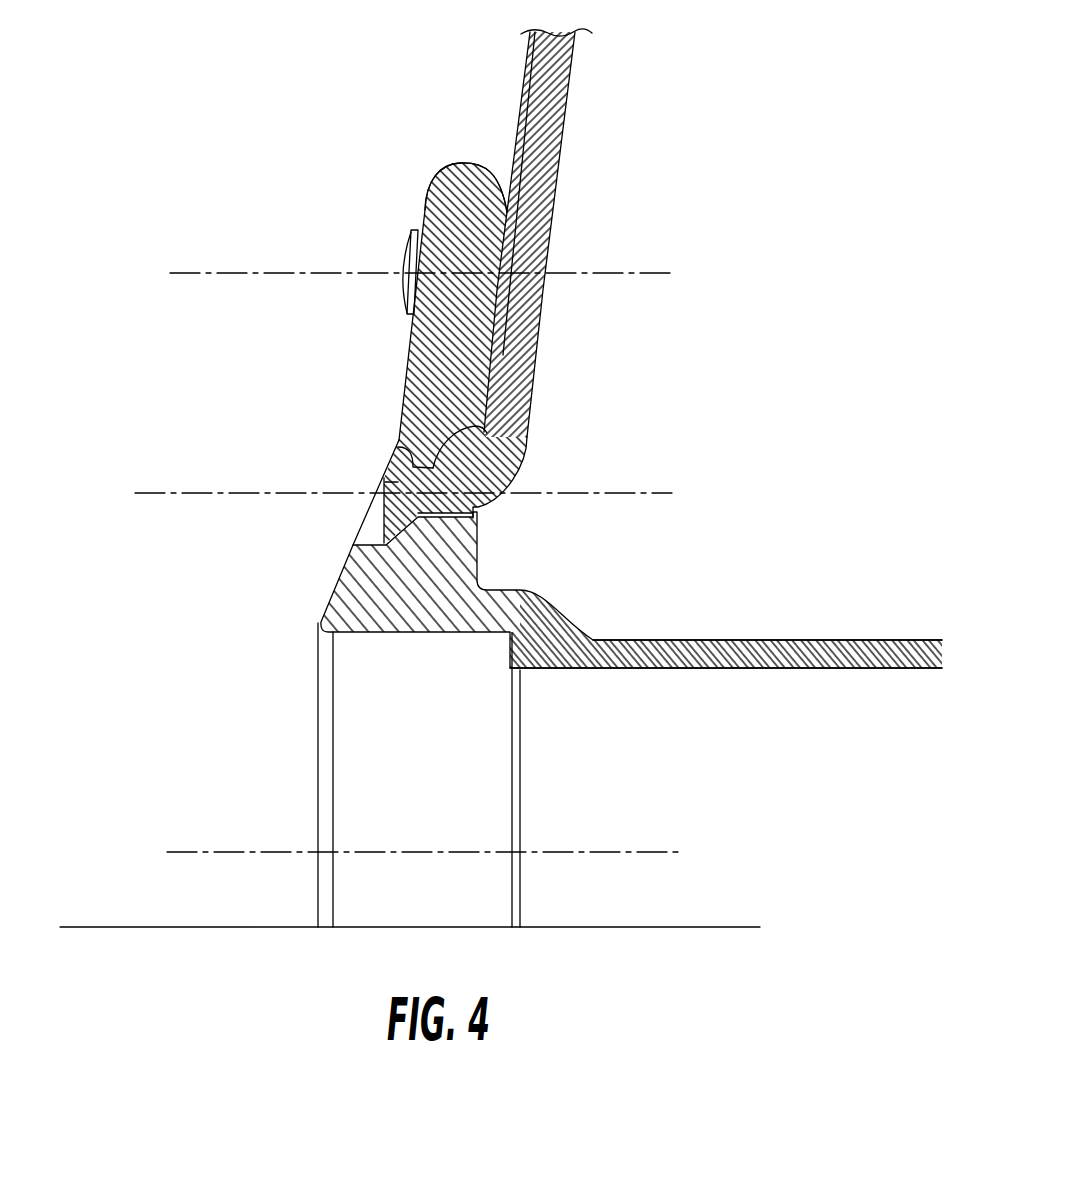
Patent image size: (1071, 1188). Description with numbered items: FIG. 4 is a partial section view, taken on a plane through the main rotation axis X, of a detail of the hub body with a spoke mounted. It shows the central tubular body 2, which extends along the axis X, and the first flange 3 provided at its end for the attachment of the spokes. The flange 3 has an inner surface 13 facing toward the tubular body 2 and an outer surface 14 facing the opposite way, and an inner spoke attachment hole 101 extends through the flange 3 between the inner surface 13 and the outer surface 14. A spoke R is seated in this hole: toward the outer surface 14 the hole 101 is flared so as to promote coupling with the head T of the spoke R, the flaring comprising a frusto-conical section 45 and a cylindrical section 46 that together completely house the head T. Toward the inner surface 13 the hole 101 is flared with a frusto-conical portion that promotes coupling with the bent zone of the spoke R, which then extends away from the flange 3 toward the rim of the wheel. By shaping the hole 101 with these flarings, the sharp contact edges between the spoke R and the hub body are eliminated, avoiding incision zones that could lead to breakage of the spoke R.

The spoke R is at (566, 70).
The first flange 3 is at (475, 174).
The outer surface 14 is at (410, 338).
The inner surface 13 is at (498, 356).
The inner spoke attachment hole 101 is at (483, 425).
The frusto-conical section 45 is at (408, 450).
The cylindrical section 46 is at (366, 545).
The central tubular body 2 is at (792, 647).
The main rotation axis X is at (105, 927).
The head of the spoke T is at (403, 262).